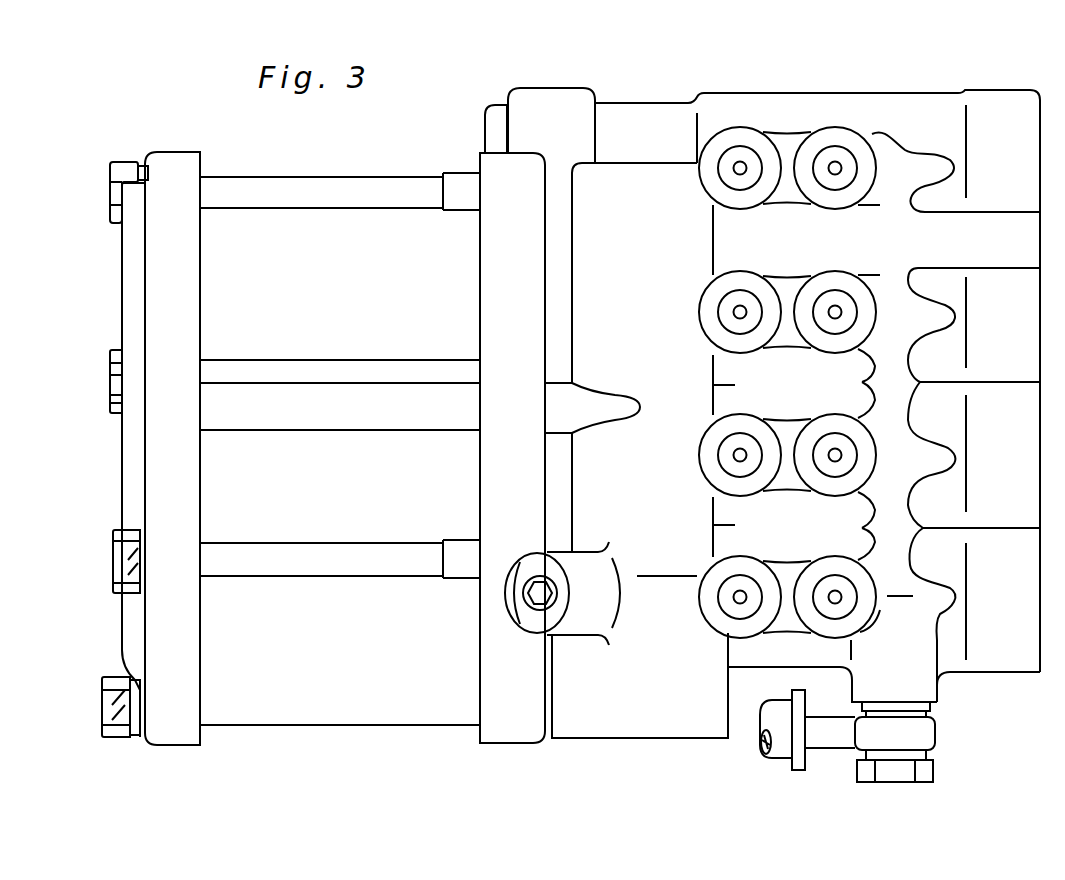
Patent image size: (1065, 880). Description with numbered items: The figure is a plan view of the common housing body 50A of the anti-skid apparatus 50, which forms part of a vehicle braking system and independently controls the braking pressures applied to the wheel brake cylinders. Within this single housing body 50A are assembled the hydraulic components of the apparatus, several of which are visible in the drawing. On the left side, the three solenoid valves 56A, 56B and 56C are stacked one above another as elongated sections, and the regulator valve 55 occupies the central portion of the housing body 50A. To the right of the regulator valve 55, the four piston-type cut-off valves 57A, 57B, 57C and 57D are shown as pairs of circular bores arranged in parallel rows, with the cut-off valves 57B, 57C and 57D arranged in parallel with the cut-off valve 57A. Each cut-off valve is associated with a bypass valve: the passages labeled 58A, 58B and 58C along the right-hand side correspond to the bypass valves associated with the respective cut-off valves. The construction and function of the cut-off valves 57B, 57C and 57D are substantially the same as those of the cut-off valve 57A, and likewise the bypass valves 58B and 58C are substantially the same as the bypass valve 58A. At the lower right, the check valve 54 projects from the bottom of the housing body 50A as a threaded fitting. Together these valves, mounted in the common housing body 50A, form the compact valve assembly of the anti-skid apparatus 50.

The anti-skid apparatus 50 is at (772, 86).
The common housing body 50A is at (640, 127).
The check valve 54 is at (940, 722).
The regulator valve 55 is at (634, 496).
The solenoid valve 56A is at (355, 661).
The solenoid valve 56B is at (357, 500).
The solenoid valve 56C is at (355, 294).
The cut-off valve 57A is at (782, 554).
The cut-off valve 57B is at (789, 417).
The cut-off valve 57C is at (797, 272).
The cut-off valve 57D is at (798, 131).
The bypass valve 58A is at (938, 163).
The bypass valve 58B is at (938, 455).
The bypass valve 58C is at (938, 318).